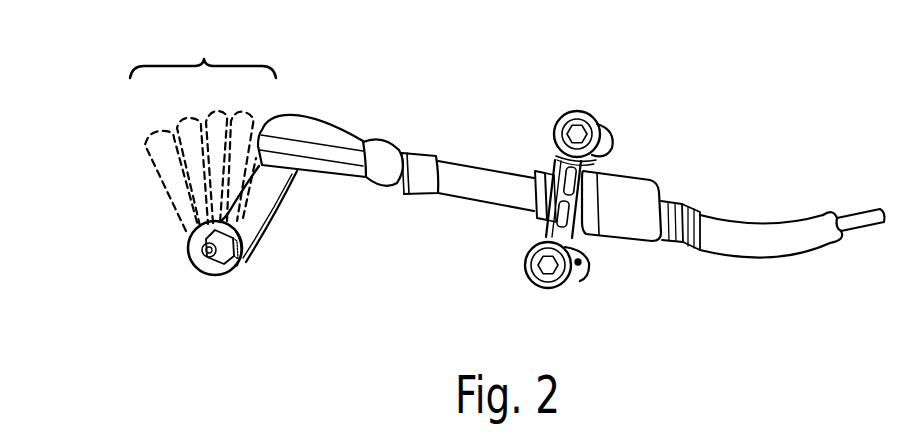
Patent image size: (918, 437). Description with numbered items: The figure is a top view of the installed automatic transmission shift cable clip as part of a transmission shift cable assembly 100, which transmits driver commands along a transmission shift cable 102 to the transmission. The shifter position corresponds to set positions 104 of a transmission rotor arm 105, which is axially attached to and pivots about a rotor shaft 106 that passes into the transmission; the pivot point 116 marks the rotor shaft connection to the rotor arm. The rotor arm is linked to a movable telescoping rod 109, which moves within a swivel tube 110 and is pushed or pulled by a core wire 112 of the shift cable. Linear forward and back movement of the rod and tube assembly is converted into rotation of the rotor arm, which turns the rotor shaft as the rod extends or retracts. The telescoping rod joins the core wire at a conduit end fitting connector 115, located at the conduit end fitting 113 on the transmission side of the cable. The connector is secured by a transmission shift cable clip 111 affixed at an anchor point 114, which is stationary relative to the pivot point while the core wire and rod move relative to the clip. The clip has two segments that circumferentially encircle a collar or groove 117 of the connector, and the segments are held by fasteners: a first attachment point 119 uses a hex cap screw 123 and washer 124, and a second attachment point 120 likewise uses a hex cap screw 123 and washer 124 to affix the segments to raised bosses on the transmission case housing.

The transmission shift cable assembly 100 is at (738, 118).
The transmission shift cable 102 is at (783, 239).
The set positions 104 is at (204, 132).
The transmission rotor arm 105 is at (265, 210).
The rotor shaft 106 is at (196, 252).
The telescoping rod 109 is at (471, 190).
The swivel tube 110 is at (332, 131).
The transmission shift cable clip 111 is at (579, 268).
The core wire 112 is at (873, 212).
The conduit end fitting 113 is at (641, 203).
The anchor point 114 is at (528, 143).
The conduit end fitting connector 115 is at (593, 192).
The pivot point 116 is at (213, 285).
The collar or groove 117 is at (540, 230).
The first attachment point 119 is at (521, 290).
The second attachment point 120 is at (580, 106).
The hex cap screw 123 is at (553, 268).
The washer 124 is at (544, 282).